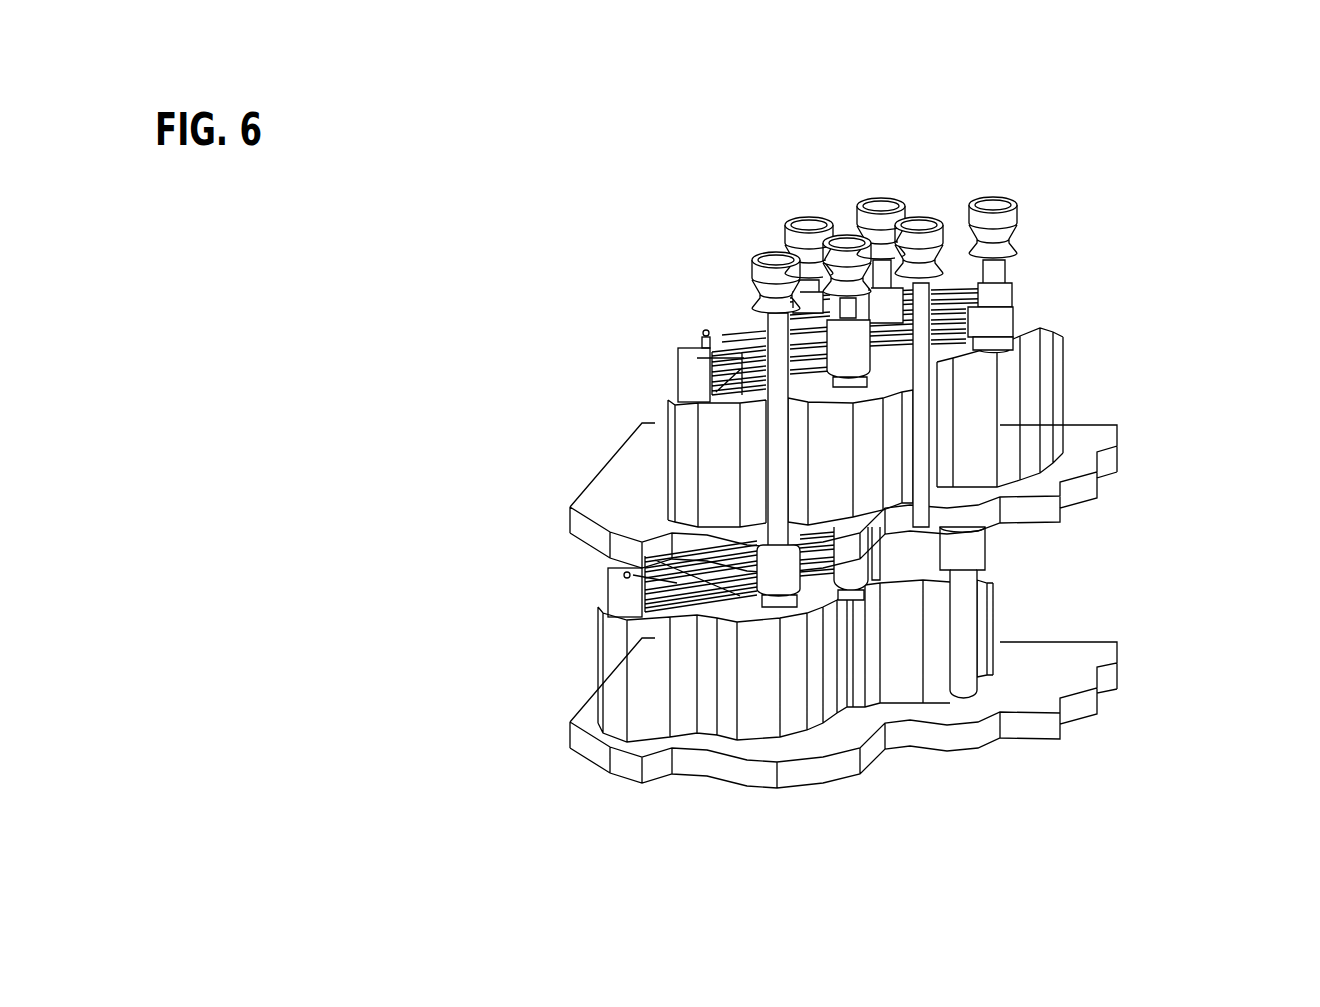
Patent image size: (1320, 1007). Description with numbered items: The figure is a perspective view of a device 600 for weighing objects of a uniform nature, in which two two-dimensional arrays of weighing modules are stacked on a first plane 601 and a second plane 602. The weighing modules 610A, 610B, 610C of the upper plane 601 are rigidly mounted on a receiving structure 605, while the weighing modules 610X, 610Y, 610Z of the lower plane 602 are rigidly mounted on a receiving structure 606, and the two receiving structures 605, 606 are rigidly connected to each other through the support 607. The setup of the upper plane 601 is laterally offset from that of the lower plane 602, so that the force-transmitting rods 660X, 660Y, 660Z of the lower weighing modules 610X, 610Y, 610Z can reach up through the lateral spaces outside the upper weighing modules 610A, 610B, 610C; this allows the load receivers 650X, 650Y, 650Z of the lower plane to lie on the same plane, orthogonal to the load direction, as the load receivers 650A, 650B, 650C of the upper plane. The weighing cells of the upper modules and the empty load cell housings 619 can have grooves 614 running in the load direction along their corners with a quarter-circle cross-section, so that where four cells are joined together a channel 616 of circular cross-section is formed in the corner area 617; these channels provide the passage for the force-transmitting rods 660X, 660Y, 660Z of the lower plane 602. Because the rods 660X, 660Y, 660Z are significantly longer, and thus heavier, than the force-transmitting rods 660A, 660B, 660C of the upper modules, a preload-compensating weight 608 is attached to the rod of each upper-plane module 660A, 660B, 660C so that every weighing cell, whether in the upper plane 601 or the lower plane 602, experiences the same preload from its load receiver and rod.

The device 600 is at (612, 262).
The first plane 601 is at (977, 592).
The second plane 602 is at (936, 708).
The receiving structure 605 is at (613, 490).
The receiving structure 606 is at (588, 716).
The support 607 is at (965, 553).
The preload-compensating weight 608 is at (1000, 296).
The weighing module 610A is at (829, 473).
The weighing module 610B is at (866, 185).
The weighing module 610C is at (1115, 421).
The weighing module 610X is at (907, 667).
The weighing module 610Y is at (815, 577).
The weighing module 610Z is at (757, 700).
The grooves 614 is at (1030, 398).
The channel 616 is at (778, 477).
The corner area 617 is at (935, 418).
The empty load cell housings 619 is at (687, 423).
The load receiver 650A is at (850, 252).
The load receiver 650B is at (887, 220).
The load receiver 650C is at (1020, 214).
The load receiver 650X is at (1003, 220).
The load receiver 650Y is at (812, 222).
The load receiver 650Z is at (747, 263).
The force-transmitting rod 660A is at (800, 253).
The force-transmitting rod 660B is at (930, 238).
The force-transmitting rod 660C is at (995, 268).
The force-transmitting rod 660X is at (980, 328).
The force-transmitting rod 660Y is at (773, 263).
The force-transmitting rod 660Z is at (770, 493).